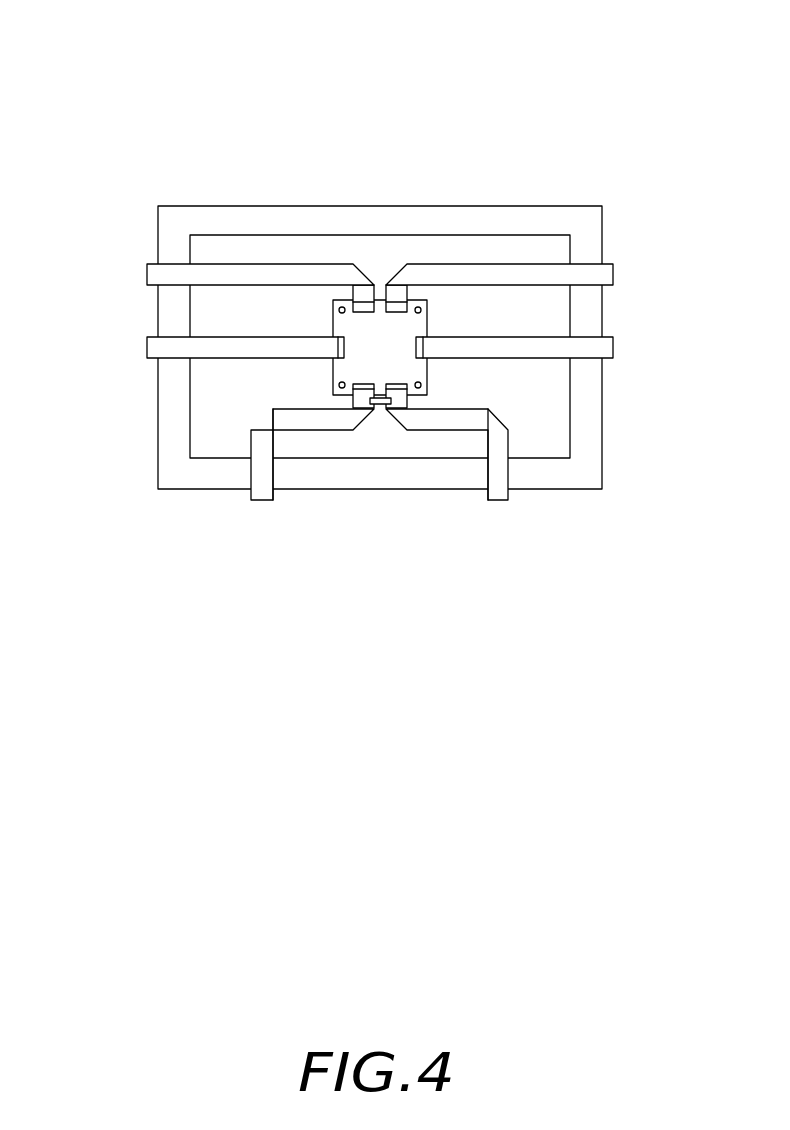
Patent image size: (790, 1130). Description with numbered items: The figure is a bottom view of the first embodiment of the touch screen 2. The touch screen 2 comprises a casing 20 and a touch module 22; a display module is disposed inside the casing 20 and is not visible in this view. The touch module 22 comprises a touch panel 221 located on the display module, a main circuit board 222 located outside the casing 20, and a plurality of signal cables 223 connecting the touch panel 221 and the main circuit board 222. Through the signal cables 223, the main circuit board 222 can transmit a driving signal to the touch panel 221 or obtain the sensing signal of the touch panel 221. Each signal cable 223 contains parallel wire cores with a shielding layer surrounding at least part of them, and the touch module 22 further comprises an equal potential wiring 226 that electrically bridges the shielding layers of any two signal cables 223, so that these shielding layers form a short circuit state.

The touch screen 2 is at (158, 74).
The casing 20 is at (208, 320).
The touch module 22 is at (578, 124).
The touch panel 221 is at (552, 217).
The main circuit board 222 is at (416, 325).
The signal cables 223 is at (277, 275).
The equal potential wiring 226 is at (382, 404).